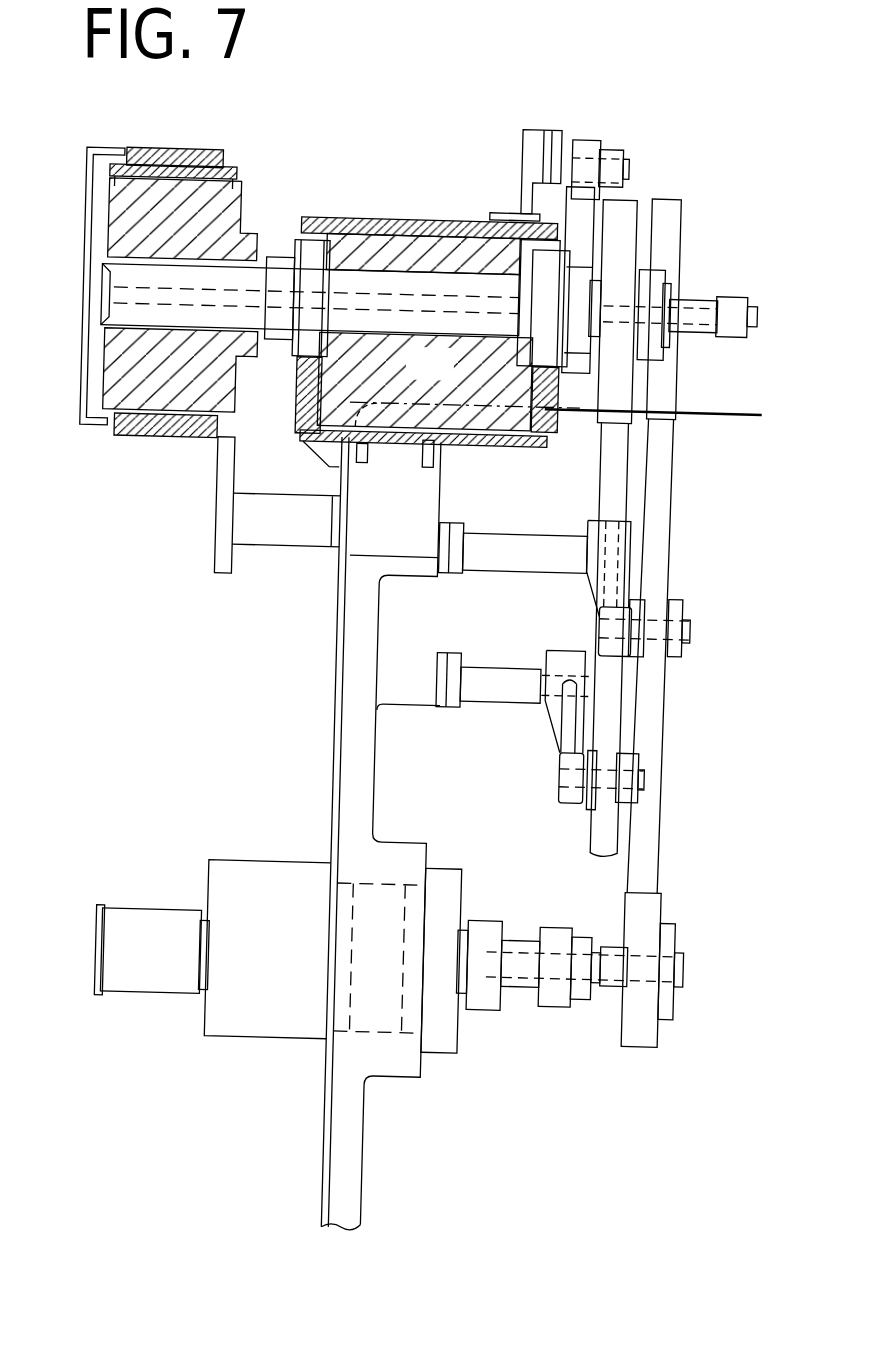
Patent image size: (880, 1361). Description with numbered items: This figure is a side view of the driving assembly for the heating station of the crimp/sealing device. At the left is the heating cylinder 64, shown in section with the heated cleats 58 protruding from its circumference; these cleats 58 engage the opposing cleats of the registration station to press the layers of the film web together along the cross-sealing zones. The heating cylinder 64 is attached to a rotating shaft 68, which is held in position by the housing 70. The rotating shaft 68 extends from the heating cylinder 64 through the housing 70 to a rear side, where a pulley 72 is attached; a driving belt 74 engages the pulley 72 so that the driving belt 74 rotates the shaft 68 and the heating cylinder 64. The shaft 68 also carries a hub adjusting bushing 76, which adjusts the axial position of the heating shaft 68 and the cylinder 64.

The cleat 58 is at (192, 153).
The heating cylinder 64 is at (236, 181).
The rotating shaft 68 is at (122, 318).
The housing 70 is at (440, 332).
The pulley 72 is at (616, 390).
The driving belt 74 is at (618, 476).
The hub adjusting bushing 76 is at (648, 345).